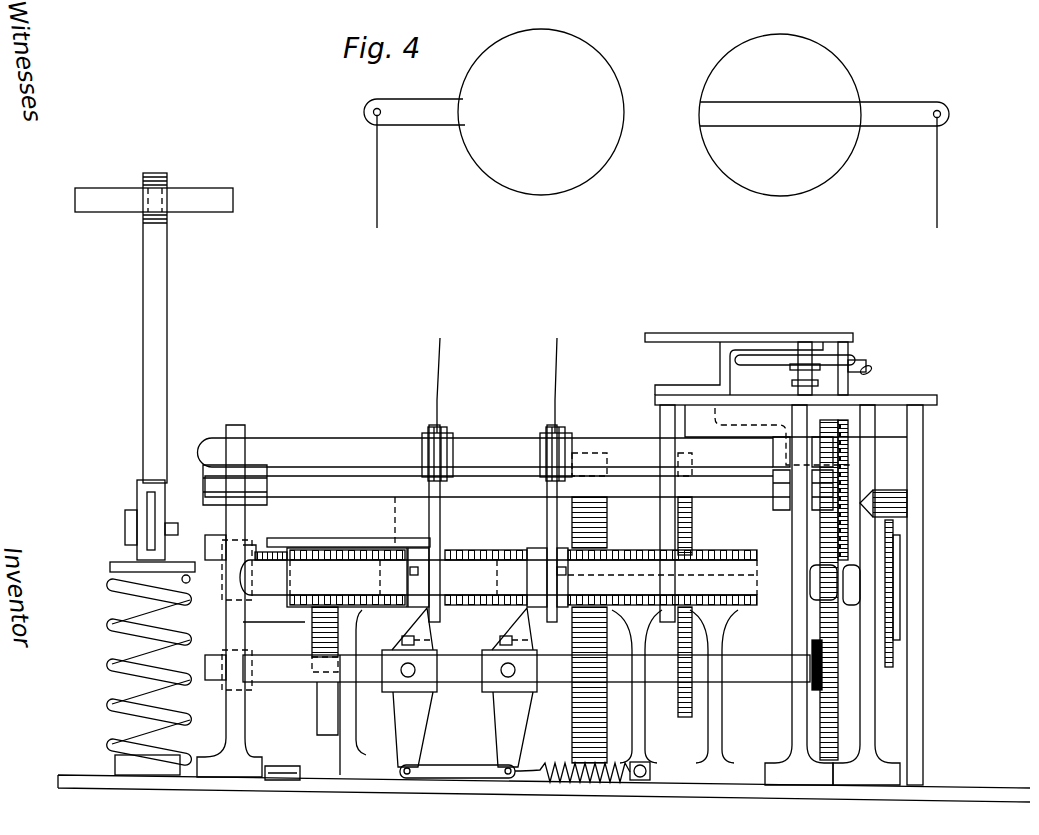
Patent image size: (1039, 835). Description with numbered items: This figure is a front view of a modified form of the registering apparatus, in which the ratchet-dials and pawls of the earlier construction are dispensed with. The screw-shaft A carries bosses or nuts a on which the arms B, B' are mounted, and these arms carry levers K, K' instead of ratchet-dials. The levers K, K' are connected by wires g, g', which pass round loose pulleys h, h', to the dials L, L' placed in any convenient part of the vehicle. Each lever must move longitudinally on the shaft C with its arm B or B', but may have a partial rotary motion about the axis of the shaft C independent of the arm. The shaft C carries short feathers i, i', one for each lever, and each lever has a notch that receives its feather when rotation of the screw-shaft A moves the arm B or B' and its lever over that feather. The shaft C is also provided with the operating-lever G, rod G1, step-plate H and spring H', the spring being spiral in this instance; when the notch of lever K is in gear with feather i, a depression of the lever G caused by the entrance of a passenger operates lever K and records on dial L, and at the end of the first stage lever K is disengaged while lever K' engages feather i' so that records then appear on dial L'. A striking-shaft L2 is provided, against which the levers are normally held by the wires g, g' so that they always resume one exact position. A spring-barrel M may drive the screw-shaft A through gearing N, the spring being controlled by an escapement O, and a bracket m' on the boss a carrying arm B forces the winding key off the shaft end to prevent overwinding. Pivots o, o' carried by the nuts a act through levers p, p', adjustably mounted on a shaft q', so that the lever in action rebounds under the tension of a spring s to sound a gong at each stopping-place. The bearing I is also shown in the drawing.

The dial L is at (494, 112).
The dial L' is at (824, 115).
The wire g is at (408, 274).
The wire g' is at (754, 275).
The step-plate H is at (154, 199).
The rod G1 is at (155, 328).
The operating-lever G is at (151, 520).
The spring H' is at (150, 668).
The bearing I is at (249, 552).
The bracket m' is at (348, 568).
The striking-shaft L2 is at (486, 467).
The spring-barrel M is at (403, 522).
The lever K is at (430, 523).
The lever K' is at (547, 523).
The loose pulley h is at (439, 447).
The loose pulley h' is at (559, 447).
The boss a is at (506, 570).
The screw-shaft A is at (498, 566).
The feather i is at (415, 563).
The feather i' is at (564, 573).
The arm B is at (418, 577).
The arm B' is at (547, 577).
The shaft C is at (662, 580).
The gearing N is at (581, 591).
The pivot o is at (414, 632).
The pivot o' is at (514, 629).
The lever p is at (409, 687).
The lever p' is at (516, 687).
The shaft q' is at (526, 668).
The spring s is at (582, 760).
The escapement O is at (866, 373).